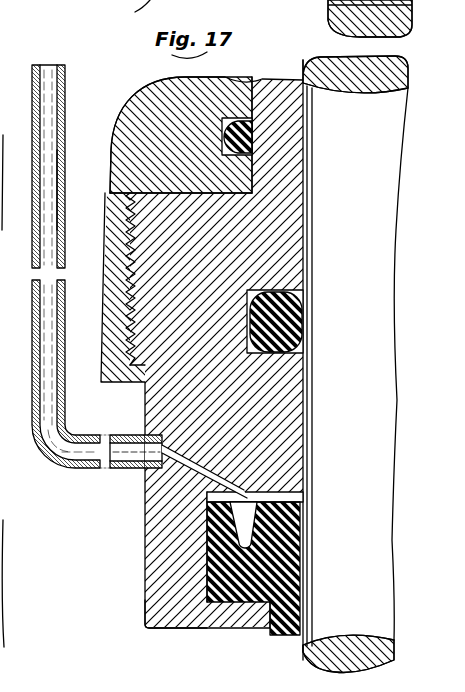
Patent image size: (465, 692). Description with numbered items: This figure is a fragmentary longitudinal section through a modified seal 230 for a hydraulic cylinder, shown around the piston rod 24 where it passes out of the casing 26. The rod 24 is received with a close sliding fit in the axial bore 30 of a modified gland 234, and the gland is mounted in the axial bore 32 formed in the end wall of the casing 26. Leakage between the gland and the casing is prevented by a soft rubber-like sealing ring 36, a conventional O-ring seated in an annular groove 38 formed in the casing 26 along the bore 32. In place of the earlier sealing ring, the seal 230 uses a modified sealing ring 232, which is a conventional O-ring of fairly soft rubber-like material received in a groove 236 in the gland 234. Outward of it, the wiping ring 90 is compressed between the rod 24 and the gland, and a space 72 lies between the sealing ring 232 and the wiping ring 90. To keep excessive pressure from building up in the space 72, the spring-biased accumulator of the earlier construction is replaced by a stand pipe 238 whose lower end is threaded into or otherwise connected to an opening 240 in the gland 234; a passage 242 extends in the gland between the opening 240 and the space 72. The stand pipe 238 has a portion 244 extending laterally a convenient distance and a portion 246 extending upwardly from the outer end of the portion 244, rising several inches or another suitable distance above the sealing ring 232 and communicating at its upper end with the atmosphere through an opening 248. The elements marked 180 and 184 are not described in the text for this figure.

The piston rod 24 is at (378, 618).
The casing 26 is at (147, 102).
The axial bore 30 is at (305, 176).
The axial bore 32 is at (262, 100).
The sealing ring 36 is at (244, 129).
The annular groove 38 is at (228, 120).
The space 72 is at (290, 500).
The wiping ring 90 is at (283, 542).
The element 180 is at (125, 11).
The element 184 is at (274, 3).
The seal 230 is at (187, 644).
The sealing ring 232 is at (303, 305).
The gland 234 is at (158, 624).
The groove 236 is at (300, 343).
The stand pipe 238 is at (66, 324).
The opening 240 is at (154, 473).
The passage 242 is at (233, 488).
The portion 244 is at (125, 472).
The portion 246 is at (67, 200).
The opening 248 is at (50, 66).